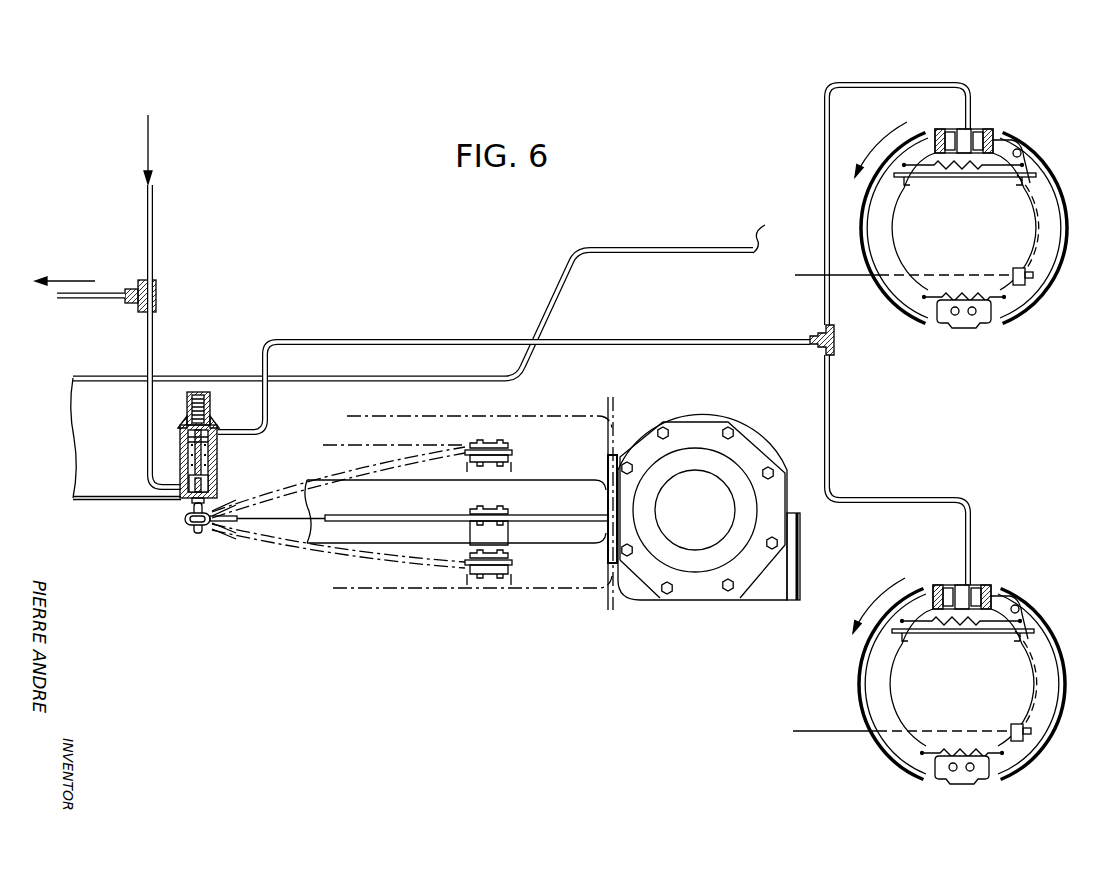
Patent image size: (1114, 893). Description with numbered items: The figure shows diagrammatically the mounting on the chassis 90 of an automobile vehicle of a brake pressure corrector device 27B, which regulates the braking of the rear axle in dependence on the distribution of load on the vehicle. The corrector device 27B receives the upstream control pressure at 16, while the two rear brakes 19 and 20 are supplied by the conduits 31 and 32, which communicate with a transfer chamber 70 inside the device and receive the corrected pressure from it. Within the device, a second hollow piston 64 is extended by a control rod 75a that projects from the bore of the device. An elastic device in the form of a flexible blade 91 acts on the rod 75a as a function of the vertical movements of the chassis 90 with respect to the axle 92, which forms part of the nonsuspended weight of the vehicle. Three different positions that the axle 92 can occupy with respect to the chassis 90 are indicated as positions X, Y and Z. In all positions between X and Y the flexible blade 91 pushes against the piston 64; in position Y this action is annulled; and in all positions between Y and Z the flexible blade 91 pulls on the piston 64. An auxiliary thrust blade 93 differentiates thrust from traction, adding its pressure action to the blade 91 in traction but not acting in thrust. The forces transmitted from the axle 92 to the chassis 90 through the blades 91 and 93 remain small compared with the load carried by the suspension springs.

The upstream control pressure inlet 16 is at (147, 440).
The rear brake 19 is at (1053, 167).
The rear brake 20 is at (1063, 648).
The corrector device 27B is at (232, 445).
The conduit 31 is at (825, 291).
The conduit 32 is at (830, 393).
The second hollow piston 64 is at (209, 476).
The transfer chamber 70 is at (214, 436).
The control rod 75a is at (193, 533).
The chassis 90 is at (93, 501).
The flexible blade 91 is at (297, 516).
The axle 92 is at (690, 414).
The auxiliary thrust blade 93 is at (386, 515).
The axle position X is at (515, 448).
The axle position Y is at (515, 518).
The axle position Z is at (515, 562).